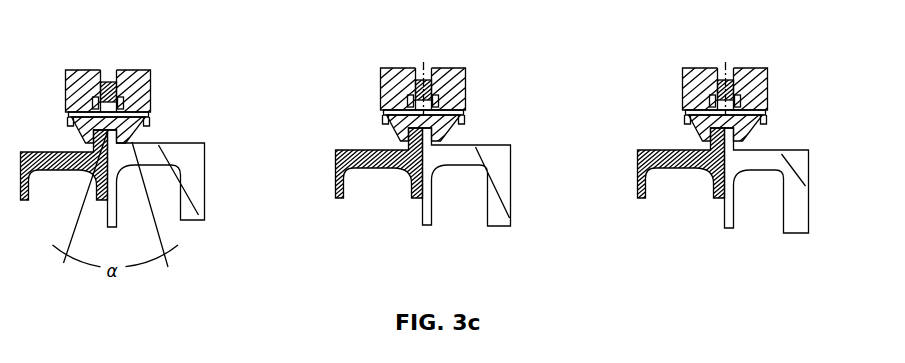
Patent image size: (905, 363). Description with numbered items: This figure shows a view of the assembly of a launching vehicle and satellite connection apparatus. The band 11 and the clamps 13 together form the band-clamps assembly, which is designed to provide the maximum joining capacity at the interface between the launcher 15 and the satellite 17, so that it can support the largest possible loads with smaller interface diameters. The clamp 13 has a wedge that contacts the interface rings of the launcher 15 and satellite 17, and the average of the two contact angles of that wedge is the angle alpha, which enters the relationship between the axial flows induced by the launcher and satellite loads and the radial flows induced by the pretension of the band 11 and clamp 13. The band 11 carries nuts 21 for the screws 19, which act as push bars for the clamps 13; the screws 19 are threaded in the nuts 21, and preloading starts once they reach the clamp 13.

The band 11 is at (424, 111).
The clamp 13 is at (424, 133).
The launcher 15 is at (768, 153).
The satellite 17 is at (693, 133).
The screw 19 is at (0, 15).
The nut 21 is at (136, 55).